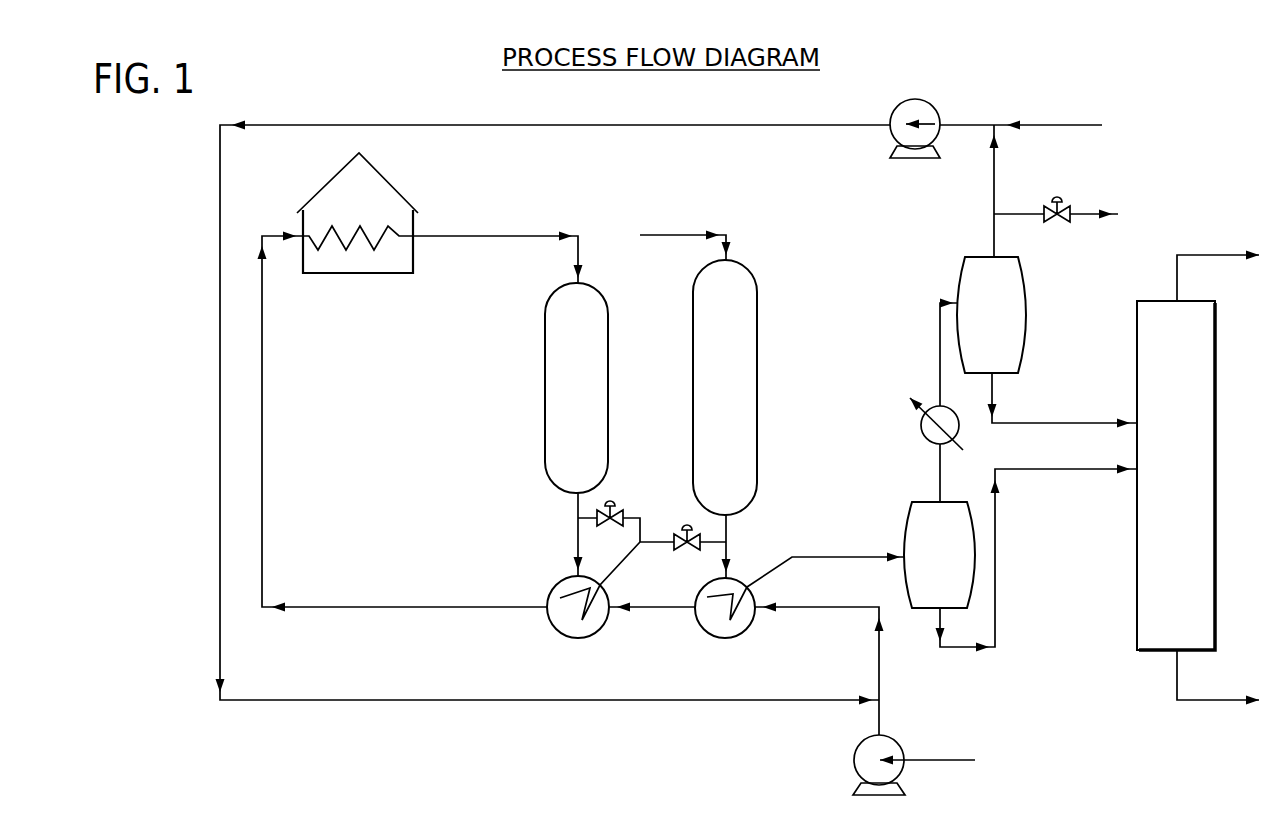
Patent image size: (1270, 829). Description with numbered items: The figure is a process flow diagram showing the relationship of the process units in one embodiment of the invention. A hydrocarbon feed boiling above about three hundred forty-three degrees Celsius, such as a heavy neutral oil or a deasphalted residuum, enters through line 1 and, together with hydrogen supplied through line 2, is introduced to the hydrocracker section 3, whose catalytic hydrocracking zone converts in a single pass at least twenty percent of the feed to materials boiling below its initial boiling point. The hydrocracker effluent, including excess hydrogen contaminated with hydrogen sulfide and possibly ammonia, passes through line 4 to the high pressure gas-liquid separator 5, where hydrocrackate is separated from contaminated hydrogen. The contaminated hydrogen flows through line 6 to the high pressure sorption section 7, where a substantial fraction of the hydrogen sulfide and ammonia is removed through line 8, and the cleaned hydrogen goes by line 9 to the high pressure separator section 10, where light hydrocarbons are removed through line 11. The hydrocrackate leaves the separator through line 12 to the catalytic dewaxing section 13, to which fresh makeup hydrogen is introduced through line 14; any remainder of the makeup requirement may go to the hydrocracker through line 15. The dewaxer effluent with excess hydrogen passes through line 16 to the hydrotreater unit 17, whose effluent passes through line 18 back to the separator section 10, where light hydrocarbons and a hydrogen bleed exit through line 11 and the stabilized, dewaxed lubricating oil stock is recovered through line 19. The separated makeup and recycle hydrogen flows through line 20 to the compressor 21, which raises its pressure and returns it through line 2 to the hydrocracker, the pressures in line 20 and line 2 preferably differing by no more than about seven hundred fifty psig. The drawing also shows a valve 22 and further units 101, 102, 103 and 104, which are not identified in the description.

The line 1 is at (945, 760).
The line 2 is at (392, 605).
The hydrocracker section 3 is at (326, 275).
The line 4 is at (447, 236).
The high pressure gas-liquid separator 5 is at (545, 348).
The line 6 is at (640, 406).
The high pressure sorption section 7 is at (693, 343).
The line 8 is at (722, 527).
The line 9 is at (930, 502).
The high pressure separator section 10 is at (937, 619).
The line 11 is at (945, 472).
The line 12 is at (980, 255).
The catalytic dewaxing section 13 is at (1033, 423).
The line 14 is at (1000, 232).
The line 15 is at (1005, 214).
The line 16 is at (1043, 125).
The hydrotreater unit 17 is at (510, 126).
The line 18 is at (1218, 452).
The line 19 is at (1188, 243).
The line 20 is at (1188, 700).
The compressor 21 is at (650, 545).
The dewaxer bypass valve 22 is at (586, 521).
The feed pump 101 is at (886, 745).
The heat exchanger 102 is at (703, 620).
The heat exchanger 103 is at (556, 616).
The recycle gas compressor 104 is at (921, 105).